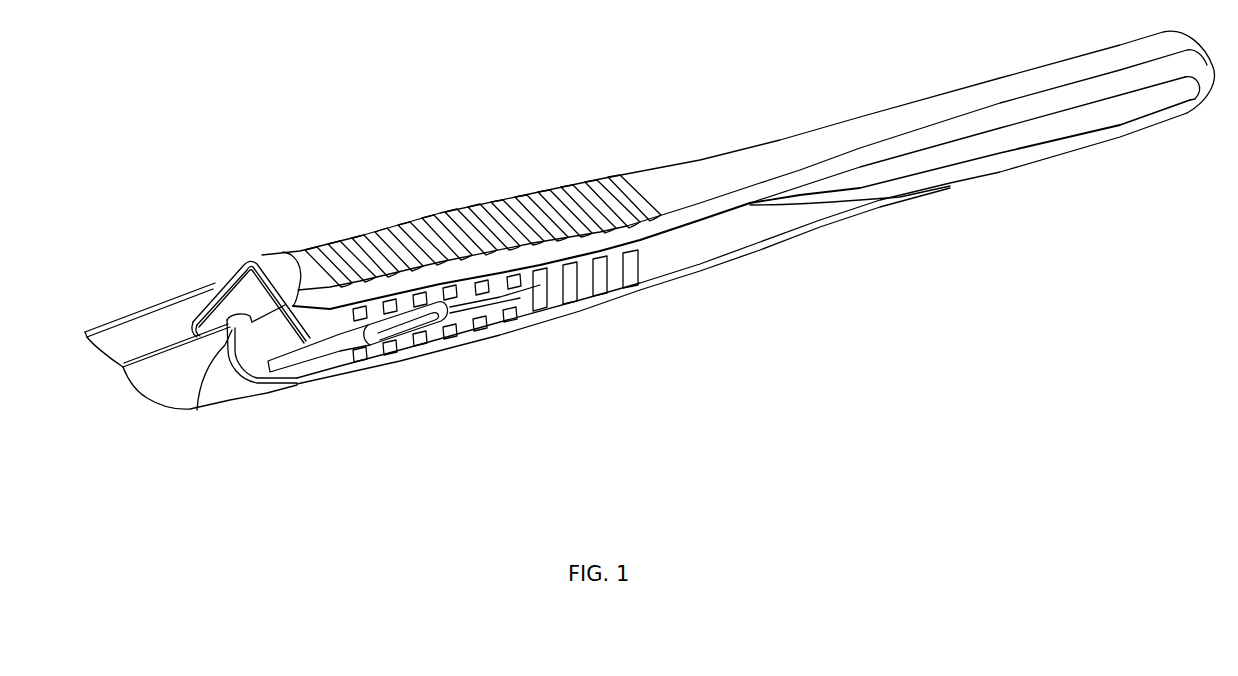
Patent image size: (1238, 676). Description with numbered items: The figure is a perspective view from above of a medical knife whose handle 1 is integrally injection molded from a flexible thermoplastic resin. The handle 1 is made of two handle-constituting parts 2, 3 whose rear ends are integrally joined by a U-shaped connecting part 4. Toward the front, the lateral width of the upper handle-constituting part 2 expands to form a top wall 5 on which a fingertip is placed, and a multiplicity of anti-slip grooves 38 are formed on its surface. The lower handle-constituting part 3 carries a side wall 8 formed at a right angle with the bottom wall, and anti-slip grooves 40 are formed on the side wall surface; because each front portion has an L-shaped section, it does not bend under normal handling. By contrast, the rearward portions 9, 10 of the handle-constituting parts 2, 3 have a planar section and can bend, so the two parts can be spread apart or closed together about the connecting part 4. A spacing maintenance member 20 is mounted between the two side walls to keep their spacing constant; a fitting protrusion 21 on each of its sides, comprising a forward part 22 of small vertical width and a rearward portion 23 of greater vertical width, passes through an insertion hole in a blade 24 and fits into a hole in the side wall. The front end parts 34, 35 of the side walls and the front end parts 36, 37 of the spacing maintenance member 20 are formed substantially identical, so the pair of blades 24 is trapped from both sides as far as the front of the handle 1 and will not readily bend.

The handle 1 is at (686, 160).
The handle-constituting part 2 is at (625, 172).
The handle-constituting part 3 is at (701, 256).
The connecting part 4 is at (1208, 96).
The top wall 5 is at (428, 218).
The side wall 8 is at (538, 302).
The rearward portion 9 is at (1027, 78).
The rearward portion 10 is at (1042, 140).
The spacing maintenance member 20 is at (255, 283).
The fitting protrusion 21 is at (402, 332).
The forward part 22 is at (323, 358).
The rearward portion 23 is at (432, 325).
The blade 24 is at (110, 330).
The front end part 34 is at (223, 277).
The front end part 35 is at (258, 353).
The front end part 36 is at (203, 312).
The front end part 37 is at (198, 412).
The anti-slip grooves 38 is at (498, 228).
The anti-slip grooves 40 is at (540, 300).